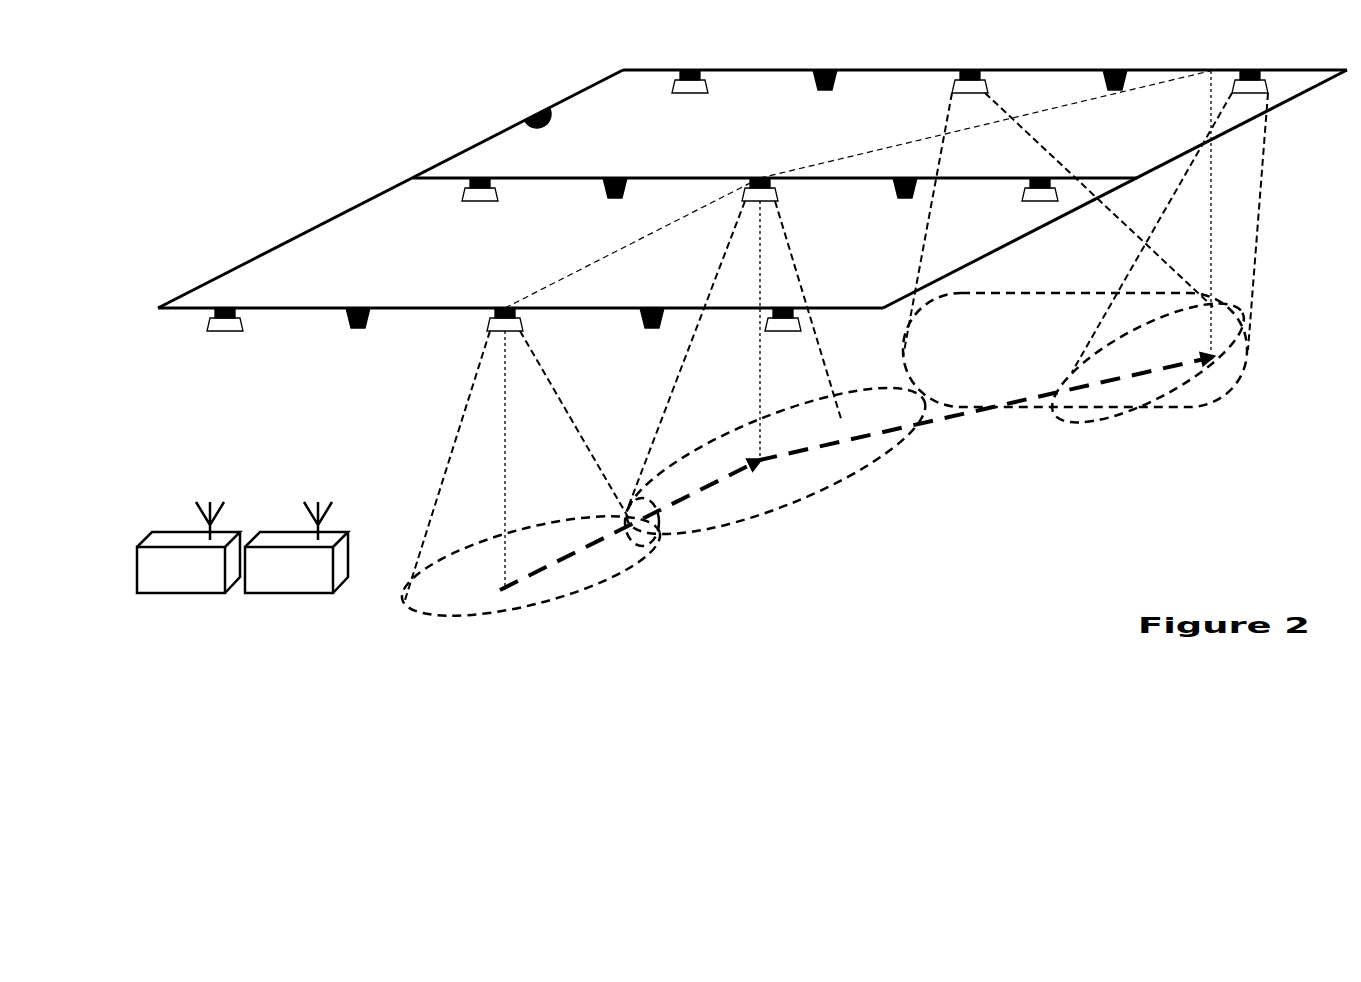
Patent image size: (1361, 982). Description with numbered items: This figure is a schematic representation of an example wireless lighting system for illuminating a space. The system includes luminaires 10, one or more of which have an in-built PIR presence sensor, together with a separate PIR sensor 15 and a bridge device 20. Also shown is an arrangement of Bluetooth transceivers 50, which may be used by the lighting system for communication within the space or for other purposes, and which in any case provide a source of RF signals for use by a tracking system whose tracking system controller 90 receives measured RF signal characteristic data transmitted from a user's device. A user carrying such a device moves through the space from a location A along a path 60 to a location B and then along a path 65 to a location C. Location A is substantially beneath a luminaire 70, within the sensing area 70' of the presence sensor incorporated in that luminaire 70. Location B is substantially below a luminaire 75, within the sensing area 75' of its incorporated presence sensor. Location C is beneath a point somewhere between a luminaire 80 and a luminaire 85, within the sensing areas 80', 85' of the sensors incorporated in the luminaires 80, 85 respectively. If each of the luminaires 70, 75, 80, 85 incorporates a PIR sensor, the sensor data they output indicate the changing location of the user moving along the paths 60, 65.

The luminaire 10 is at (670, 85).
The PIR sensor 15 is at (537, 108).
The bridge device 20 is at (196, 530).
The Bluetooth transceiver 50 is at (832, 68).
The path 60 is at (667, 507).
The path 65 is at (1103, 383).
The luminaire 70 is at (516, 454).
The luminaire 75 is at (734, 344).
The luminaire 80 is at (1047, 213).
The luminaire 85 is at (1170, 221).
The sensing area 70' is at (547, 567).
The sensing area 75' is at (776, 471).
The sensing area 80' is at (1075, 350).
The sensing area 85' is at (1116, 380).
The tracking system controller 90 is at (305, 527).
The location A is at (497, 590).
The location B is at (763, 466).
The location C is at (1220, 362).